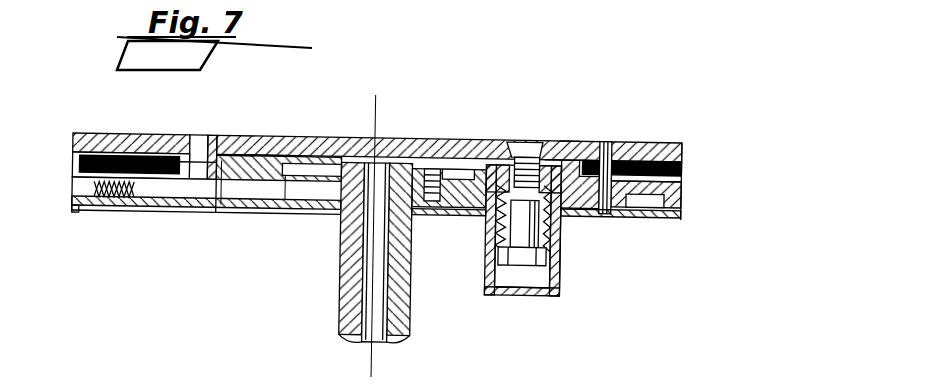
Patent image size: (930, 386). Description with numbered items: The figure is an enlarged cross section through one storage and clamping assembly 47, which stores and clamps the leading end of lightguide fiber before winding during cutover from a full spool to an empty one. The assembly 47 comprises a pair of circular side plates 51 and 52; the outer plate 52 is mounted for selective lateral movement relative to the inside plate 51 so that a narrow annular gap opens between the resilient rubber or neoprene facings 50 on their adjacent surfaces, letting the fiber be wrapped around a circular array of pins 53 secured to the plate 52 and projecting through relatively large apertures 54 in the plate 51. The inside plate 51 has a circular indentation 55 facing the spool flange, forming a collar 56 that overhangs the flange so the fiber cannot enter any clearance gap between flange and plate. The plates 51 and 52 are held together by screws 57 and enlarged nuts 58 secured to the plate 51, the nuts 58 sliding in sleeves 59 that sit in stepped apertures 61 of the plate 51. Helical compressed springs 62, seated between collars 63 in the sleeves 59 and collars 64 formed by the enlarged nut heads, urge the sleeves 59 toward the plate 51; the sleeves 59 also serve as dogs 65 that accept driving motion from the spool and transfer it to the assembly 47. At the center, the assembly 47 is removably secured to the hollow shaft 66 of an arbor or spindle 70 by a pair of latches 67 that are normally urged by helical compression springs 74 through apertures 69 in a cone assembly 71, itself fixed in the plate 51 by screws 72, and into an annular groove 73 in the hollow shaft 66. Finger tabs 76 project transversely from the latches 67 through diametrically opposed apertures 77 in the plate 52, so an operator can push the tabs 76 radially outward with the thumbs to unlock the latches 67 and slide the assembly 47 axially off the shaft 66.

The storage and clamping assembly 47 is at (568, 125).
The resilient annular facings 50 is at (95, 150).
The inside side plate 51 is at (683, 177).
The outside side plate 52 is at (683, 147).
The pins 53 is at (610, 144).
The apertures 54 is at (613, 211).
The circular indentation 55 is at (166, 203).
The collar 56 is at (77, 210).
The screws 57 is at (537, 135).
The enlarged nuts 58 is at (525, 283).
The sleeves 59 is at (569, 270).
The stepped apertures 61 is at (476, 215).
The helical compressed springs 62 is at (564, 232).
The collars in sleeves 63 is at (495, 143).
The collars on enlarged nuts 64 is at (481, 213).
The dogs 65 is at (578, 247).
The hollow shaft 66 is at (350, 321).
The latches 67 is at (261, 215).
The apertures in cone assembly 69 is at (286, 191).
The arbor or spindle 70 is at (340, 337).
The cone assembly 71 is at (344, 281).
The screws 72 is at (425, 154).
The annular groove 73 is at (339, 234).
The helical compression springs 74 is at (100, 200).
The finger tabs 76 is at (223, 128).
The apertures in plate 52 77 is at (253, 127).